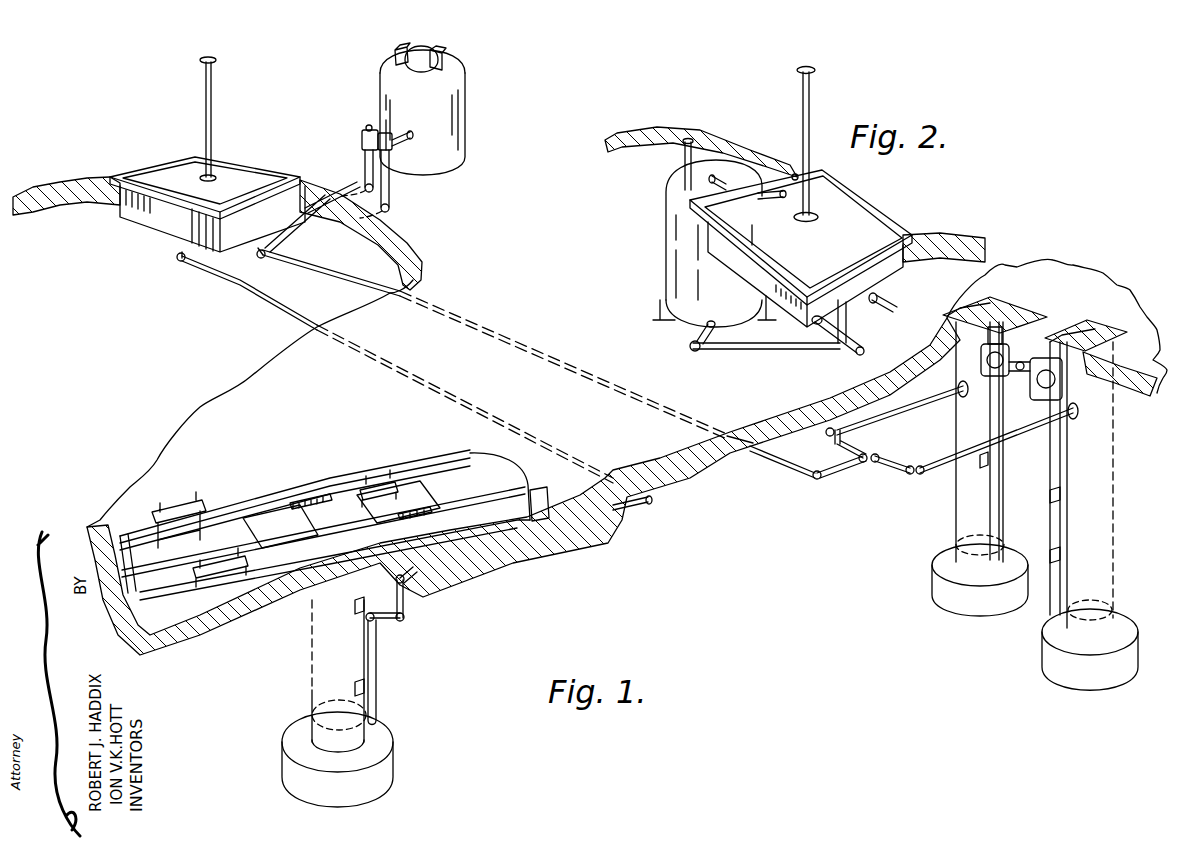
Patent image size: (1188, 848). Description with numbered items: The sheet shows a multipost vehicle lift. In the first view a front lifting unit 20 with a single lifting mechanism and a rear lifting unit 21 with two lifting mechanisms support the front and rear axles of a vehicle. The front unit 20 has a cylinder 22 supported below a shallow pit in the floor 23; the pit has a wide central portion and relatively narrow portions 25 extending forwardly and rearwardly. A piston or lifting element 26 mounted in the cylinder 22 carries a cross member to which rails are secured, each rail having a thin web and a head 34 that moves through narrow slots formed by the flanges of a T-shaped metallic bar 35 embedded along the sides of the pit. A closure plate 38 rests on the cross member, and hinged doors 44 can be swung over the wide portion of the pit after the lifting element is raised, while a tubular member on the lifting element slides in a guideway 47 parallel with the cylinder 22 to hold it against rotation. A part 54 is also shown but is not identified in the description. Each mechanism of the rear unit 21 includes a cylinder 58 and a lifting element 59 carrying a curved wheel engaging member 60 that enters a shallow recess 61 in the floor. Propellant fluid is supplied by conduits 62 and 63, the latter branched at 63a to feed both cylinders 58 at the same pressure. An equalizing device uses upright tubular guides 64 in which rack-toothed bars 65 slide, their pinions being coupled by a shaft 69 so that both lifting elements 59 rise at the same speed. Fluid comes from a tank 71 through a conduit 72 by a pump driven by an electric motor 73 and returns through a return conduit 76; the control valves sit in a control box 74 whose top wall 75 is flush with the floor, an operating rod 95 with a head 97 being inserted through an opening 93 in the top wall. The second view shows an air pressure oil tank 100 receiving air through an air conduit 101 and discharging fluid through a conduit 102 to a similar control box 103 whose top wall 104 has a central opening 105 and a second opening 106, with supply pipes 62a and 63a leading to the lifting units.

In FIG. 1, the lifting unit 20 is at (265, 682).
In FIG. 1, the second lifting unit 21 is at (986, 640).
In FIG. 1, the cylinder 22 is at (316, 681).
In FIG. 1, the floor 23 is at (512, 568).
In FIG. 1, the narrow portions of the pit 25 is at (540, 505).
In FIG. 1, the piston or lifting element 26 is at (312, 712).
In FIG. 1, the rail head 34 is at (450, 503).
In FIG. 1, the metallic bar 35 is at (470, 455).
In FIG. 1, the closure plate 38 is at (341, 514).
In FIG. 1, the doors 44 is at (376, 483).
In FIG. 1, the guideway 47 is at (376, 639).
In FIG. 1, the bracket 54 is at (178, 508).
In FIG. 1, the cylinder 58 is at (952, 545).
In FIG. 1, the piston or lifting element 59 is at (957, 495).
In FIG. 1, the wheel engaging member 60 is at (1005, 312).
In FIG. 1, the shallow recess 61 is at (966, 311).
In FIG. 1, the conduit 62 is at (484, 406).
In FIG. 2, the supply pipe 62a is at (858, 345).
In FIG. 1, the conduit 63 is at (592, 382).
In FIG. 2, the branch conduit 63a is at (884, 303).
In FIG. 1, the branch conduit 63a is at (905, 411).
In FIG. 1, the upright tubular guides 64 is at (1000, 523).
In FIG. 1, the bar 65 is at (1008, 350).
In FIG. 1, the shaft 69 is at (1030, 386).
In FIG. 1, the tank 71 is at (466, 122).
In FIG. 1, the conduit 72 is at (393, 187).
In FIG. 1, the electric motor 73 is at (416, 70).
In FIG. 1, the control box 74 is at (166, 223).
In FIG. 1, the top wall 75 is at (118, 204).
In FIG. 1, the return conduit 76 is at (362, 178).
In FIG. 1, the opening 93 is at (220, 183).
In FIG. 1, the operating rod 95 is at (213, 117).
In FIG. 1, the head 97 is at (217, 61).
In FIG. 2, the oil tank 100 is at (674, 252).
In FIG. 2, the air conduit 101 is at (722, 178).
In FIG. 2, the conduit 102 is at (726, 353).
In FIG. 2, the control box 103 is at (727, 251).
In FIG. 2, the top wall 104 is at (852, 212).
In FIG. 2, the central opening 105 is at (818, 212).
In FIG. 2, the second opening 106 is at (770, 190).